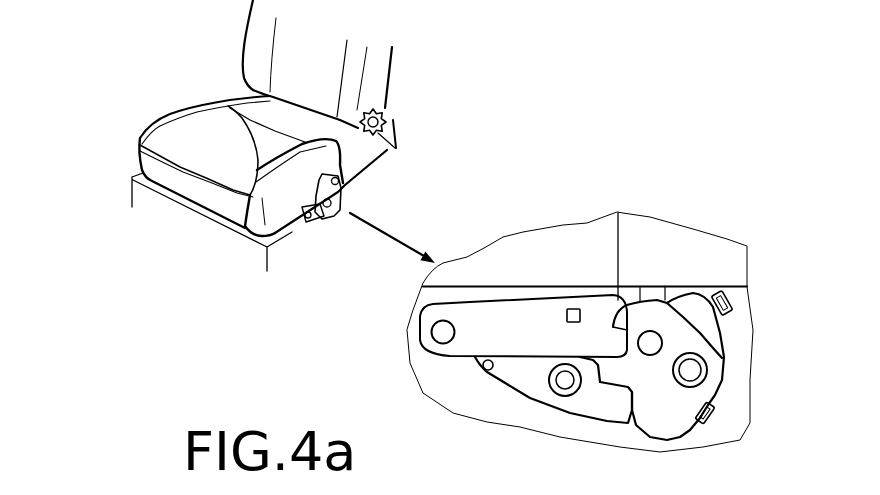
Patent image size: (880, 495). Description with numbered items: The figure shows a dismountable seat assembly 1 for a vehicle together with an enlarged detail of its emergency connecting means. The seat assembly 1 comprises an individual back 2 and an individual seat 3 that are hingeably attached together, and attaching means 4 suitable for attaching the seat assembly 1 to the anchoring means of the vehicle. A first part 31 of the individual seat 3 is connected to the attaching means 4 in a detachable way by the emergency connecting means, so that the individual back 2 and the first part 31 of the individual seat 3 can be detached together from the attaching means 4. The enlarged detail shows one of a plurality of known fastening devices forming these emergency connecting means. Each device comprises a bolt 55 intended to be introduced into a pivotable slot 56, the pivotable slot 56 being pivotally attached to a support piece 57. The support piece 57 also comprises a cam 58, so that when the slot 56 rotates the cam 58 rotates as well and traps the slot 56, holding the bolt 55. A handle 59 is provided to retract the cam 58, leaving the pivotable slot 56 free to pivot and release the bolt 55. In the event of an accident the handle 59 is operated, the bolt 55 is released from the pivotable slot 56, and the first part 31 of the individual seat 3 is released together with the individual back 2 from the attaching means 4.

The seat assembly 1 is at (206, 40).
The individual back 2 is at (323, 70).
The individual seat 3 is at (172, 100).
The attaching means 4 is at (395, 148).
The first part of the individual seat 31 is at (252, 112).
The bolt 55 is at (350, 192).
The pivotable slot 56 is at (352, 180).
The support piece 57 is at (720, 323).
The cam 58 is at (533, 377).
The handle 59 is at (487, 372).